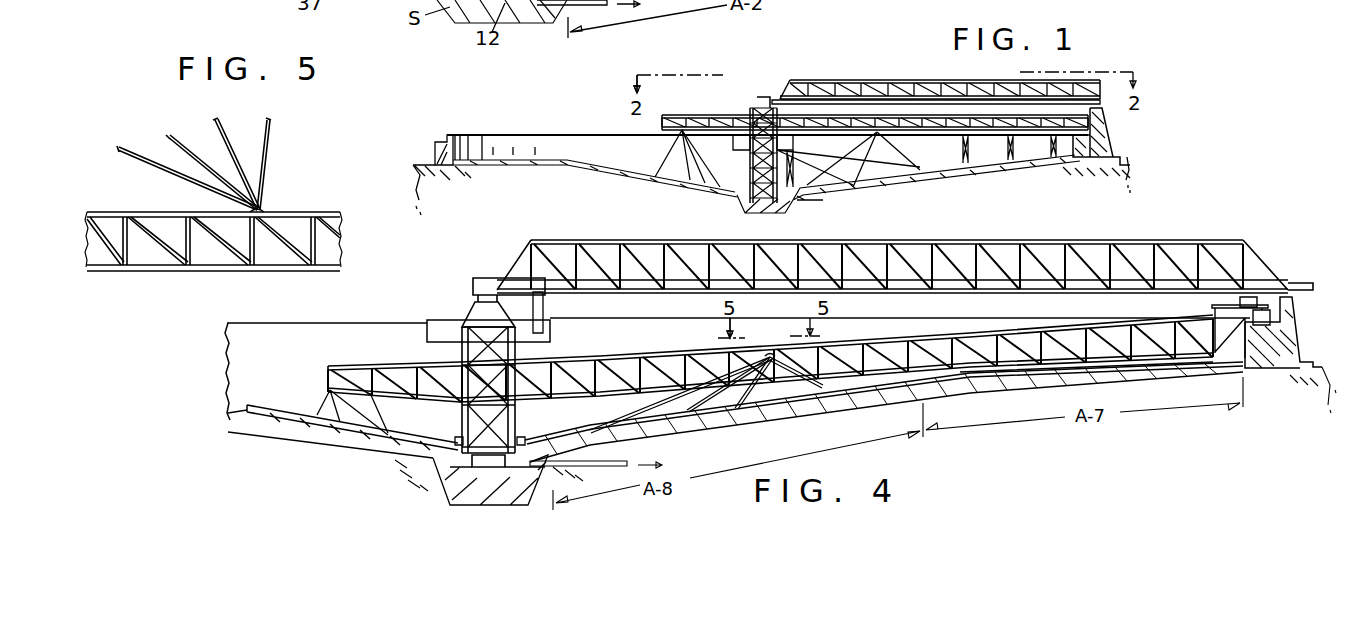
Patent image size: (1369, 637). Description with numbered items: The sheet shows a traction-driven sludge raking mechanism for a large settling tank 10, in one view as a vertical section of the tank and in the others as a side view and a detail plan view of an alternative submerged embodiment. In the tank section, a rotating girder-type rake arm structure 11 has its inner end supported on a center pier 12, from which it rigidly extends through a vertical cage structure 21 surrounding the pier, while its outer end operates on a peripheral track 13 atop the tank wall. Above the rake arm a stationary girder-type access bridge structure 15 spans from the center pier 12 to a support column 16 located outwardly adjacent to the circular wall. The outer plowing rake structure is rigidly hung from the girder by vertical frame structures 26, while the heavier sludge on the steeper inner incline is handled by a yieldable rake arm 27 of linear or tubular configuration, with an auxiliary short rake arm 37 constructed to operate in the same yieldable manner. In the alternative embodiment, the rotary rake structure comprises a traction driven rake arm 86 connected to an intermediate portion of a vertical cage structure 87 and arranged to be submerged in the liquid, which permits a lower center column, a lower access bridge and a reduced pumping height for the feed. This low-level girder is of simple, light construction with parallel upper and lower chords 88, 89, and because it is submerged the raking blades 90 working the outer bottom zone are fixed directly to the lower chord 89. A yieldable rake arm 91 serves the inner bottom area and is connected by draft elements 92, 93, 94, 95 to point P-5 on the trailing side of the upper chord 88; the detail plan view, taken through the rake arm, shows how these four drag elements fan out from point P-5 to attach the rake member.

In FIG. 1, the settling tank 10 is at (510, 130).
In FIG. 1, the rake arm structure 11 is at (950, 115).
In FIG. 1, the center pier 12 is at (757, 107).
In FIG. 1, the peripheral track 13 is at (1100, 140).
In FIG. 1, the access bridge structure 15 is at (880, 79).
In FIG. 1, the support column 16 is at (1100, 118).
In FIG. 1, the vertical cage structure 21 is at (750, 160).
In FIG. 1, the vertical frame structures 26 is at (965, 160).
In FIG. 1, the yieldable rake arm 27 is at (862, 180).
In FIG. 1, the auxiliary short rake arm 37 is at (655, 177).
In FIG. 4, the traction driven rake arm 86 is at (940, 332).
In FIG. 4, the vertical cage structure 87 is at (517, 357).
In FIG. 4, the upper chord 88 is at (610, 360).
In FIG. 4, the lower chord 89 is at (585, 404).
In FIG. 4, the raking blades 90 is at (1005, 386).
In FIG. 4, the yieldable rake arm 91 is at (748, 410).
In FIG. 5, the draft element 92 is at (165, 175).
In FIG. 4, the draft element 92 is at (637, 412).
In FIG. 5, the draft element 93 is at (190, 152).
In FIG. 4, the draft element 93 is at (707, 404).
In FIG. 5, the draft element 94 is at (233, 155).
In FIG. 4, the draft element 94 is at (763, 390).
In FIG. 5, the draft element 95 is at (268, 145).
In FIG. 4, the draft element 95 is at (827, 384).
In FIG. 5, the attachment point P-5 is at (270, 208).
In FIG. 4, the attachment point P-5 is at (770, 355).